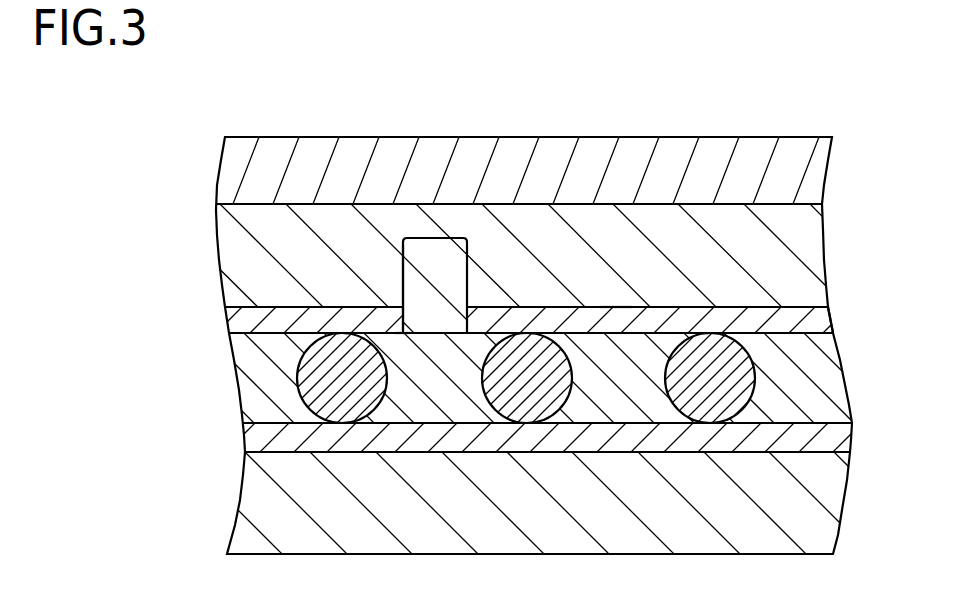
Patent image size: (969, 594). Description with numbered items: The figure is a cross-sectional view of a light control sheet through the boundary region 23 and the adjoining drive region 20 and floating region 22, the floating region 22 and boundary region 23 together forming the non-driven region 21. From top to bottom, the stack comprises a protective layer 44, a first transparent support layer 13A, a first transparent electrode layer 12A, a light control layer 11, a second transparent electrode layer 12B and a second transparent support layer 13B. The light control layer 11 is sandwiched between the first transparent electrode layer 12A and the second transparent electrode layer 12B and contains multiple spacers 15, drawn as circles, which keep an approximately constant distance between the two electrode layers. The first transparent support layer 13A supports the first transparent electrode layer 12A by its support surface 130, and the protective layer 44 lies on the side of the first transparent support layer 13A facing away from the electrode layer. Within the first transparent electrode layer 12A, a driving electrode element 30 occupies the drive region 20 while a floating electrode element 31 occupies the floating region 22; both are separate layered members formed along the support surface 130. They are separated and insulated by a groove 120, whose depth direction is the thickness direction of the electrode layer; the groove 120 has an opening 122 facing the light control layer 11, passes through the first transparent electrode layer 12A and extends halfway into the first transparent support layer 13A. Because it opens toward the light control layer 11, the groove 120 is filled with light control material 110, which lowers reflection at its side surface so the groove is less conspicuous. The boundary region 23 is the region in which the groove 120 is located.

The protective layer 44 is at (218, 163).
The first transparent support layer 13A is at (213, 243).
The first transparent electrode layer 12A is at (498, 323).
The floating electrode element 31 is at (225, 317).
The light control layer 11 is at (237, 373).
The spacers 15 is at (302, 402).
The second transparent electrode layer 12B is at (243, 436).
The second transparent support layer 13B is at (238, 490).
The light control material 110 is at (452, 278).
The groove 120 is at (403, 271).
The opening 122 is at (404, 335).
The support surface 130 is at (615, 312).
The driving electrode element 30 is at (828, 310).
The drive region 20 is at (832, 118).
The non-driven region 21 is at (452, 80).
The floating region 22 is at (403, 118).
The boundary region 23 is at (467, 118).